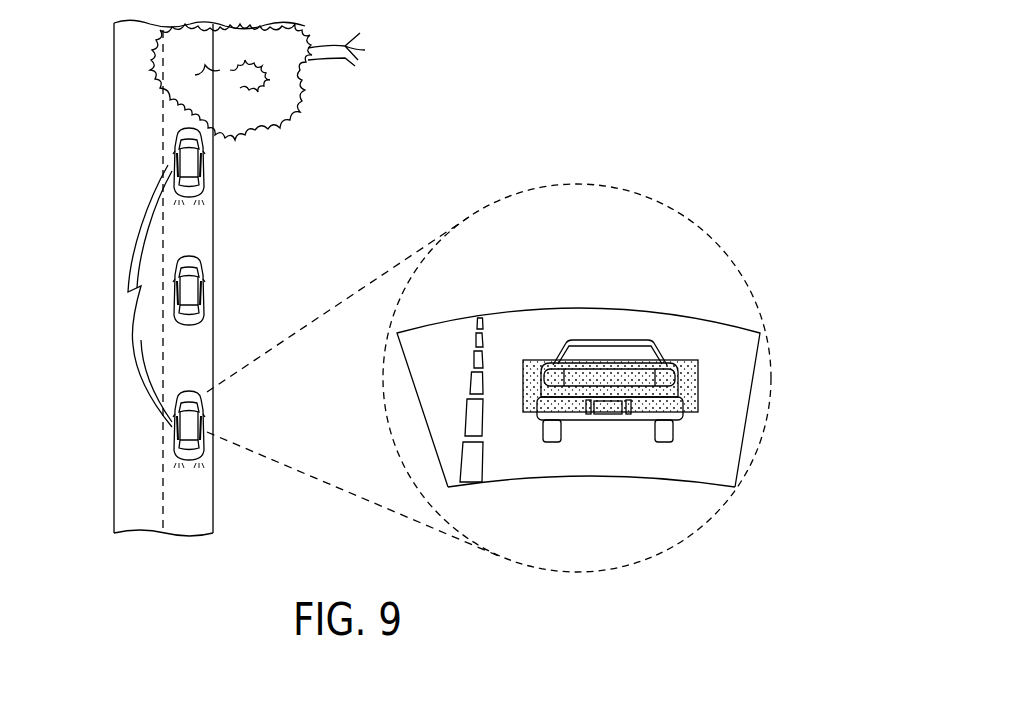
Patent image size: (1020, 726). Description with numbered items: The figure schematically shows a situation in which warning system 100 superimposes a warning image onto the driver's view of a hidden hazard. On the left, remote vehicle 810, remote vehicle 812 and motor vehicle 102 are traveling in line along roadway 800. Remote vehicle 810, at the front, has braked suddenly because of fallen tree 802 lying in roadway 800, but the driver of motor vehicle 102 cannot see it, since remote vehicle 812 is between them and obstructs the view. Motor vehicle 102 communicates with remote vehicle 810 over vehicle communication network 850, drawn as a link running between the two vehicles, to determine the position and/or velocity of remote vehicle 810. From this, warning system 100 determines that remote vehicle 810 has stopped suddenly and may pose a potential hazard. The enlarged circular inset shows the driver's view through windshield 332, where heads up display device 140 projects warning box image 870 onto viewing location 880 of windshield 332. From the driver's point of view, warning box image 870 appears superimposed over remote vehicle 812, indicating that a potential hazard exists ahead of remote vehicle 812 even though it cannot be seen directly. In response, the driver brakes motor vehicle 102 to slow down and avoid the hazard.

The warning system 100 is at (668, 248).
The motor vehicle 102 is at (203, 460).
The heads up display device 140 is at (562, 490).
The windshield 332 is at (523, 325).
The roadway 800 is at (205, 233).
The fallen tree 802 is at (328, 58).
The remote vehicle 810 is at (182, 138).
The remote vehicle 812 is at (195, 315).
The vehicle communication network 850 is at (130, 224).
The warning box image 870 is at (702, 372).
The viewing location 880 is at (686, 338).